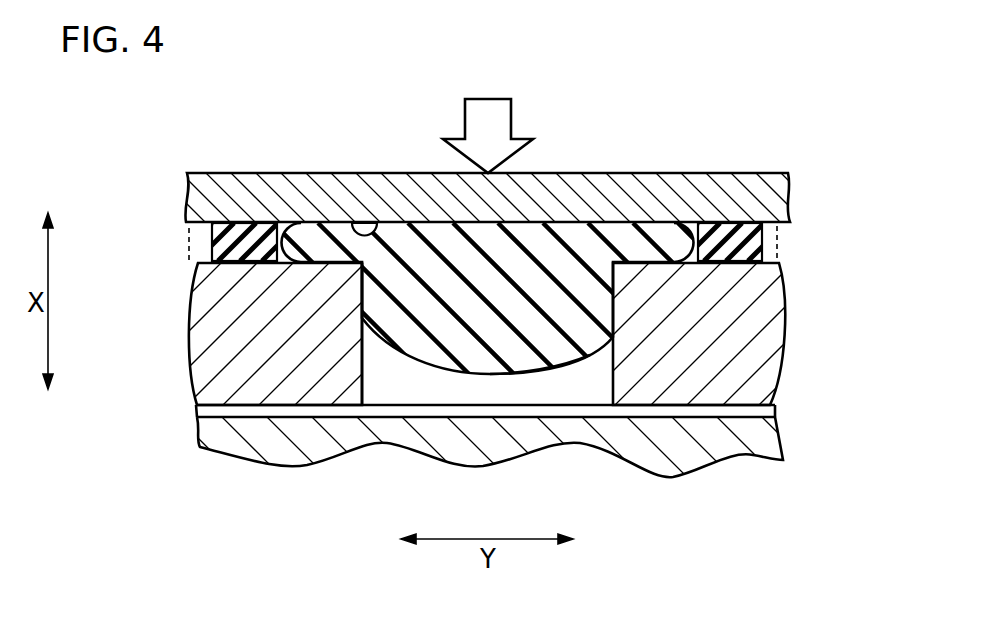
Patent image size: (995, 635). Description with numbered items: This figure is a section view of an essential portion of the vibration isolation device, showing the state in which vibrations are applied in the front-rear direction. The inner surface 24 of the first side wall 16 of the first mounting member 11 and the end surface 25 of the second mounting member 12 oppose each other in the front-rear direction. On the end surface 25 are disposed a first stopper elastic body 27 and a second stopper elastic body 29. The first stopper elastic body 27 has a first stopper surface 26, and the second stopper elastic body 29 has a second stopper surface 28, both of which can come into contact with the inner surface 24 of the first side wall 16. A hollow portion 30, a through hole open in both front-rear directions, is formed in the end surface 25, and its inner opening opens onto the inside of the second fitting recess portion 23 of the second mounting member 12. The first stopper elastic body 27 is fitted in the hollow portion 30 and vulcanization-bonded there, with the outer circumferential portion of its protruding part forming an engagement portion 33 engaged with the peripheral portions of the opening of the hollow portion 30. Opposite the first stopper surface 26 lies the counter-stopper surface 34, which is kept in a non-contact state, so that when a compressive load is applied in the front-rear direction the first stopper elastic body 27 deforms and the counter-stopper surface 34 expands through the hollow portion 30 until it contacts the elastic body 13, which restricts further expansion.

The first mounting member 11 is at (562, 171).
The first side wall 16 is at (607, 172).
The first stopper surface 26 is at (422, 222).
The inner surface 24 is at (354, 228).
The second stopper elastic body 29 is at (245, 216).
The end surface 25 is at (203, 262).
The second stopper surface 28 is at (723, 222).
The engagement portion 33 is at (668, 235).
The second mounting member 12 is at (787, 332).
The first stopper elastic body 27 is at (361, 310).
The second fitting recess portion 23 is at (750, 413).
The elastic body 13 is at (787, 440).
The hollow portion 30 is at (367, 374).
The counter-stopper surface 34 is at (535, 374).